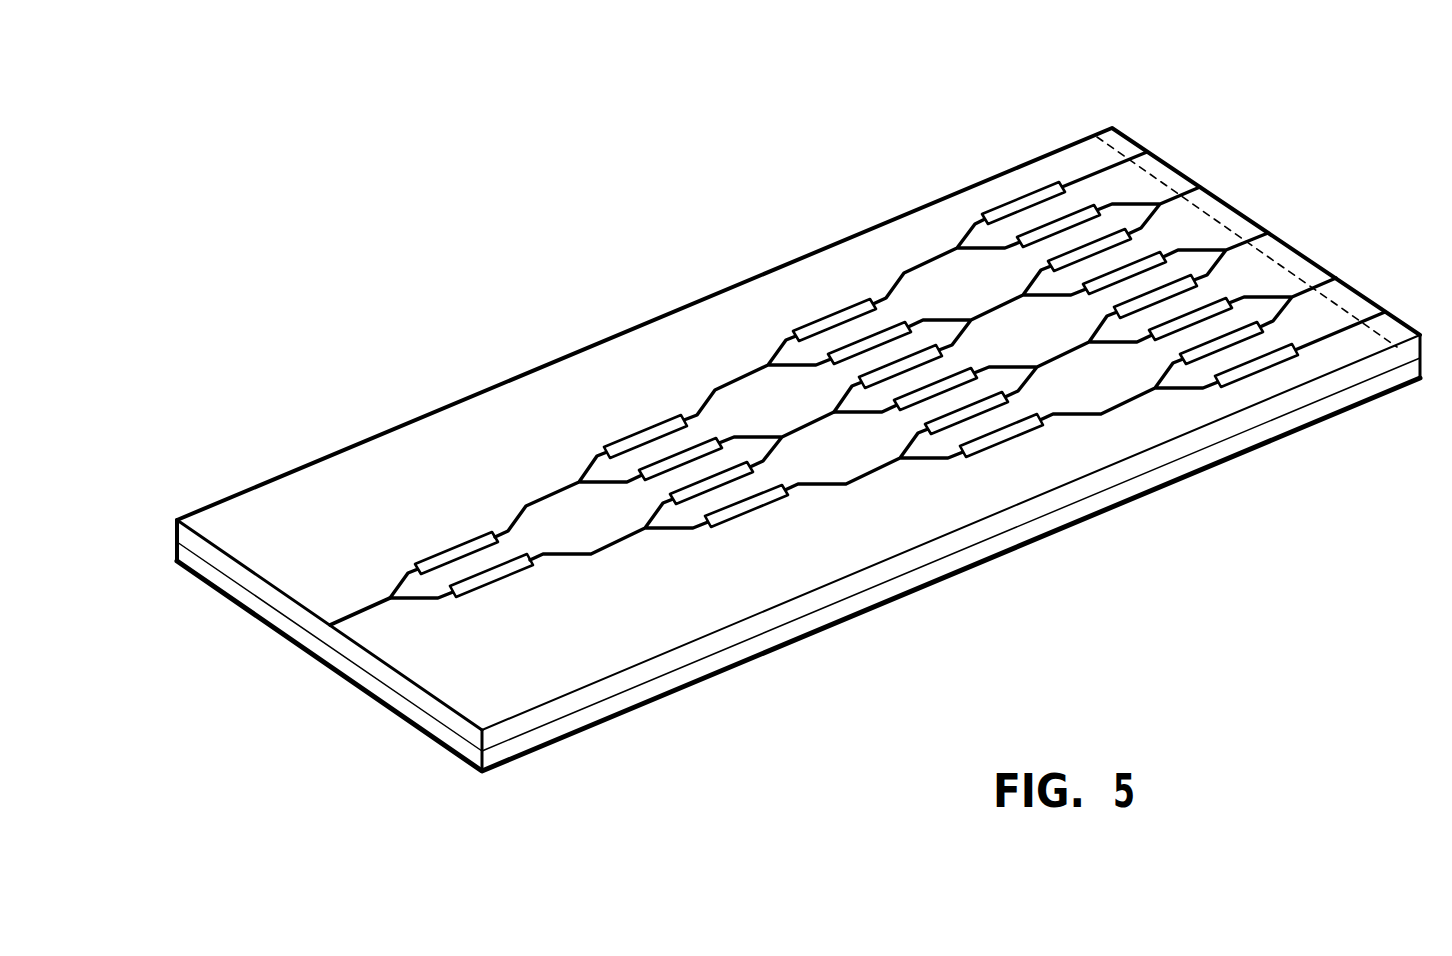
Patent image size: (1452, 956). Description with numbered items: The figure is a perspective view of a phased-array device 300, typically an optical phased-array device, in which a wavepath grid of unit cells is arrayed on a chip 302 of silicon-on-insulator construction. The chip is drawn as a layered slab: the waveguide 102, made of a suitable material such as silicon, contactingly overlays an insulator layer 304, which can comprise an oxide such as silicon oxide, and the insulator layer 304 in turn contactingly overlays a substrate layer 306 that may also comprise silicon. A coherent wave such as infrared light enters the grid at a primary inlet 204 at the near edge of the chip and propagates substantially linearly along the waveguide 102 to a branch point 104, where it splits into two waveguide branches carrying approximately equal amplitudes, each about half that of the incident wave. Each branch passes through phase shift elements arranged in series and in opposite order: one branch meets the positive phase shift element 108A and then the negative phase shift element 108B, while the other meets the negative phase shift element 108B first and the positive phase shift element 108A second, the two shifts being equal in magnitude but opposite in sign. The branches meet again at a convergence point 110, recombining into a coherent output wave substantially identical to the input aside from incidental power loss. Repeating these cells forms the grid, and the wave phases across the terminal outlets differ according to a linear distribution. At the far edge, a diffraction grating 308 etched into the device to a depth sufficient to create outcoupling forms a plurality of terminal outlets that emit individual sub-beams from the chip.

The phased-array device 300 is at (388, 198).
The chip 302 is at (213, 505).
The insulator layer 304 is at (1335, 385).
The substrate layer 306 is at (1245, 440).
The diffraction grating 308 is at (1115, 148).
The waveguide 102 is at (563, 466).
The branch point 104 is at (390, 597).
The primary inlet 204 is at (363, 623).
The positive phase shift element 108A is at (457, 546).
The negative phase shift element 108B is at (490, 574).
The convergence point 110 is at (782, 437).